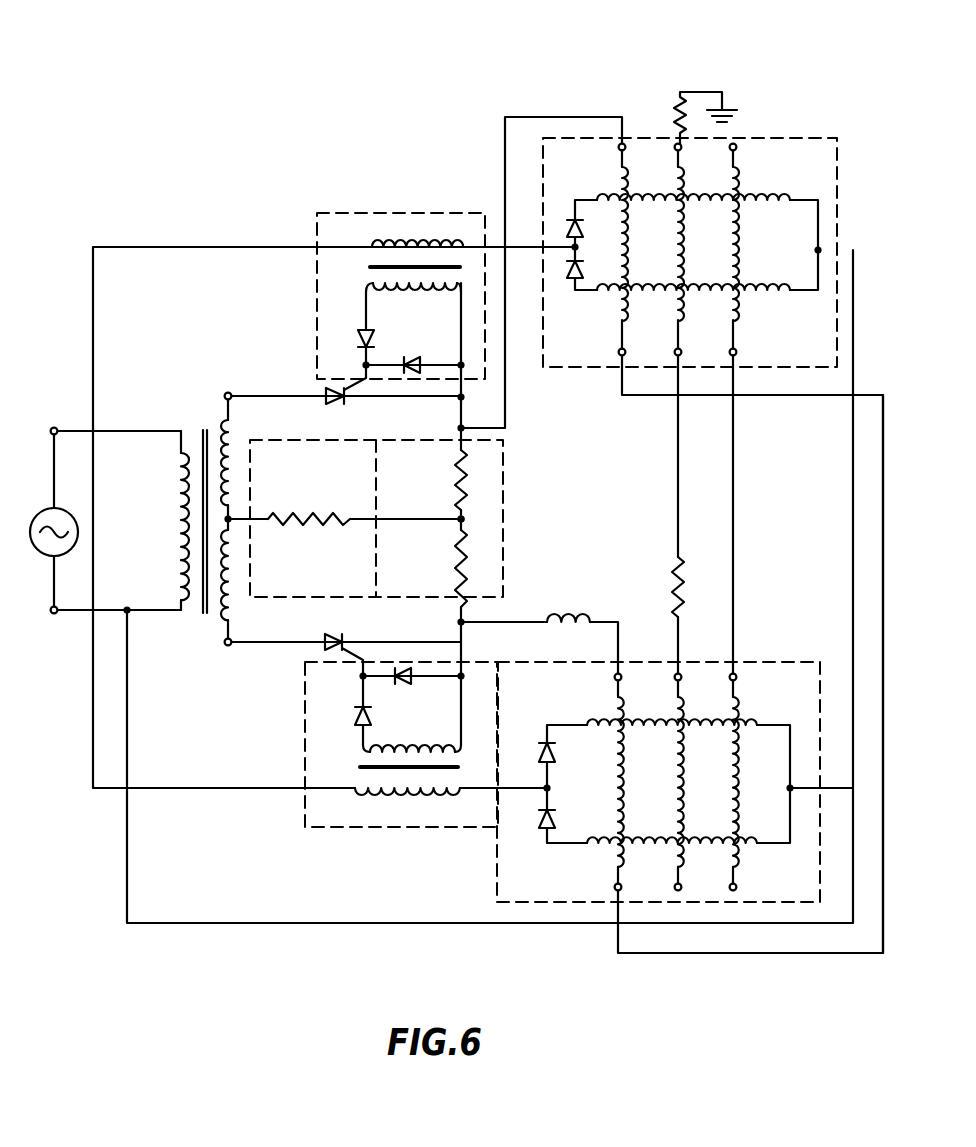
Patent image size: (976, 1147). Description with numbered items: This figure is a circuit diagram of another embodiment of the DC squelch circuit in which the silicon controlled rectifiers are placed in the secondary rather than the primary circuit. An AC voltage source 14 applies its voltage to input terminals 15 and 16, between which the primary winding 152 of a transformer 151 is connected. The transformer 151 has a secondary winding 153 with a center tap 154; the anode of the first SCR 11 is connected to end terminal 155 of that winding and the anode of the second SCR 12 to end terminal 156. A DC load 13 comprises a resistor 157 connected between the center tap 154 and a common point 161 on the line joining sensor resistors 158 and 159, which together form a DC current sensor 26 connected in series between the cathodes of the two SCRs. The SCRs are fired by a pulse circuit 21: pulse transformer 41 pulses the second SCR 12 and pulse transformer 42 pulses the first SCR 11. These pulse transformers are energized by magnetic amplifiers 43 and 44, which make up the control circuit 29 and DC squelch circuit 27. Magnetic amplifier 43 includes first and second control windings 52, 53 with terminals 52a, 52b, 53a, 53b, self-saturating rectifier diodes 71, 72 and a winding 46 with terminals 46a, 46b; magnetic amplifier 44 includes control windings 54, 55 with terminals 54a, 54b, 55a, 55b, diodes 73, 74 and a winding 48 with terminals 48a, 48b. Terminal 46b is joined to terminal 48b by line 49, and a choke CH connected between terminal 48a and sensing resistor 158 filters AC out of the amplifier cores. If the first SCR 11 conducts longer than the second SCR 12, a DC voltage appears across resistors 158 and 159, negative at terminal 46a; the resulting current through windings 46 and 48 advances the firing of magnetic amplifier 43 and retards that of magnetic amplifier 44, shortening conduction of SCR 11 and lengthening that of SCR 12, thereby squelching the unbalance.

The first SCR 11 is at (334, 637).
The second SCR 12 is at (326, 393).
The load 13 is at (258, 415).
The AC voltage source 14 is at (81, 488).
The input terminal 15 is at (51, 428).
The input terminal 16 is at (53, 613).
The pulse circuit 21 is at (455, 183).
The DC current sensor 26 is at (525, 528).
The DC squelch circuit 27 is at (604, 940).
The control circuit 29 is at (585, 496).
The pulse transformer 41 is at (346, 286).
The pulse transformer 42 is at (340, 766).
The magnetic amplifier 43 is at (610, 232).
The magnetic amplifier 44 is at (592, 811).
The winding 46 is at (682, 270).
The winding terminal 46a is at (619, 148).
The winding terminal 46b is at (619, 351).
The winding 48 is at (612, 757).
The winding terminal 48a is at (616, 678).
The winding terminal 48b is at (622, 887).
The line 49 is at (895, 604).
The first control winding 52 is at (673, 252).
The winding terminal 52a is at (677, 150).
The winding terminal 52b is at (659, 346).
The second control winding 53 is at (745, 233).
The winding terminal 53a is at (737, 150).
The winding terminal 53b is at (742, 353).
The first control winding 54 is at (672, 778).
The winding terminal 54a is at (675, 678).
The winding terminal 54b is at (682, 887).
The second control winding 55 is at (727, 784).
The winding terminal 55a is at (737, 679).
The winding terminal 55b is at (737, 887).
The self-saturating rectifier diode 71 is at (566, 230).
The self-saturating rectifier diode 72 is at (567, 280).
The self-saturating rectifier diode 73 is at (539, 754).
The self-saturating rectifier diode 74 is at (539, 820).
The transformer 151 is at (223, 515).
The primary winding 152 is at (179, 540).
The secondary winding 153 is at (230, 600).
The center tap 154 is at (231, 519).
The end terminal 155 is at (227, 645).
The end terminal 156 is at (226, 393).
The resistor 157 is at (315, 514).
The resistor 158 is at (455, 571).
The resistor 159 is at (455, 481).
The common point 161 is at (462, 519).
The choke CH is at (582, 632).